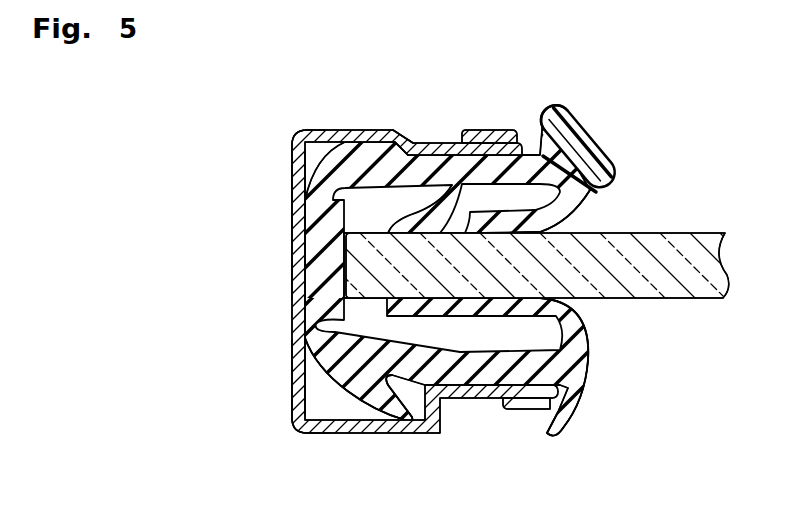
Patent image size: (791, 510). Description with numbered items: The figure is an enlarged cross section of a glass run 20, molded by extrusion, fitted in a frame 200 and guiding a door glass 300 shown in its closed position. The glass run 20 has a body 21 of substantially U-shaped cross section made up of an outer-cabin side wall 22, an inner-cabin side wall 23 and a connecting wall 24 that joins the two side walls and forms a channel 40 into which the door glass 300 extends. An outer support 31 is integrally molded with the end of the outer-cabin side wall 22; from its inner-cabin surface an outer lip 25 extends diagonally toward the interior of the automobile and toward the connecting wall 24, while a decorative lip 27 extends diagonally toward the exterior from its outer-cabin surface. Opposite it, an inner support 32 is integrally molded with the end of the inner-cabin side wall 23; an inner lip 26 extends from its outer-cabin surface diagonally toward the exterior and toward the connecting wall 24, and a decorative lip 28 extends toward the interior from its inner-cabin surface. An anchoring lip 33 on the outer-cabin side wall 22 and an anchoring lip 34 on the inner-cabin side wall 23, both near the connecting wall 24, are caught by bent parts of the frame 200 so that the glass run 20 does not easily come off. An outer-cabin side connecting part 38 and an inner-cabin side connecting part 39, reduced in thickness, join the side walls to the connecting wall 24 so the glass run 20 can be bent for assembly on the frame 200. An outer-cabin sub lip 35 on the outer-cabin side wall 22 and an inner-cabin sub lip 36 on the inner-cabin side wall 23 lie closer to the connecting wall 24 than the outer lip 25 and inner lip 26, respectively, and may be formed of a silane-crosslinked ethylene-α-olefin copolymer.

The glass run 20 is at (611, 206).
The body 21 is at (296, 277).
The outer-cabin side wall 22 is at (452, 143).
The inner-cabin side wall 23 is at (467, 397).
The connecting wall 24 is at (290, 218).
The outer lip 25 is at (518, 222).
The inner lip 26 is at (537, 312).
The decorative lip 27 is at (551, 108).
The decorative lip 28 is at (570, 425).
The outer support 31 is at (580, 153).
The inner support 32 is at (572, 378).
The anchoring lip 33 is at (397, 132).
The anchoring lip 34 is at (380, 398).
The outer-cabin sub lip 35 is at (436, 218).
The inner-cabin sub lip 36 is at (440, 312).
The outer-cabin side connecting part 38 is at (284, 156).
The inner-cabin side connecting part 39 is at (290, 363).
The channel 40 is at (377, 228).
The frame 200 is at (362, 130).
The door glass 300 is at (672, 233).